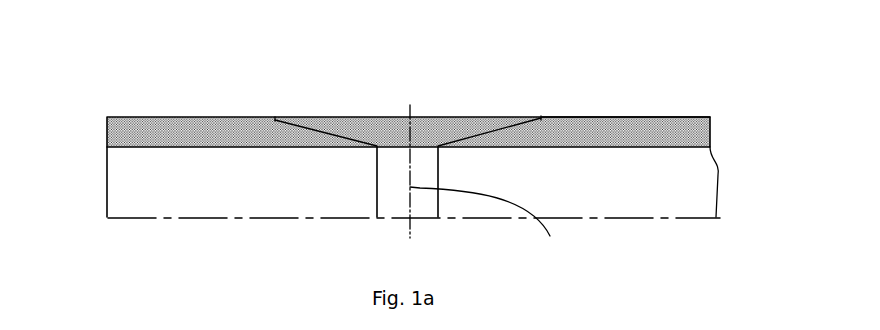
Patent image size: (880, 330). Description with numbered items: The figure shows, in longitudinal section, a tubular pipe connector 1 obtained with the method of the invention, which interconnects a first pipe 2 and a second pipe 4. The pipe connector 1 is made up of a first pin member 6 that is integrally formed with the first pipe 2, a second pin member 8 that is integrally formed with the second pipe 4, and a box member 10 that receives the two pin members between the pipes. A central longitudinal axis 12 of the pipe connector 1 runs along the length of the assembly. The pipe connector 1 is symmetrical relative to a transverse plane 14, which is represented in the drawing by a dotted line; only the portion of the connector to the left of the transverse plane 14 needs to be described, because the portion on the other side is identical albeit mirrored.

The tubular pipe connector 1 is at (432, 105).
The first pipe 2 is at (128, 120).
The second pipe 4 is at (662, 120).
The first pin member 6 is at (296, 128).
The second pin member 8 is at (515, 128).
The box member 10 is at (380, 118).
The central longitudinal axis 12 is at (627, 220).
The transverse plane 14 is at (486, 225).